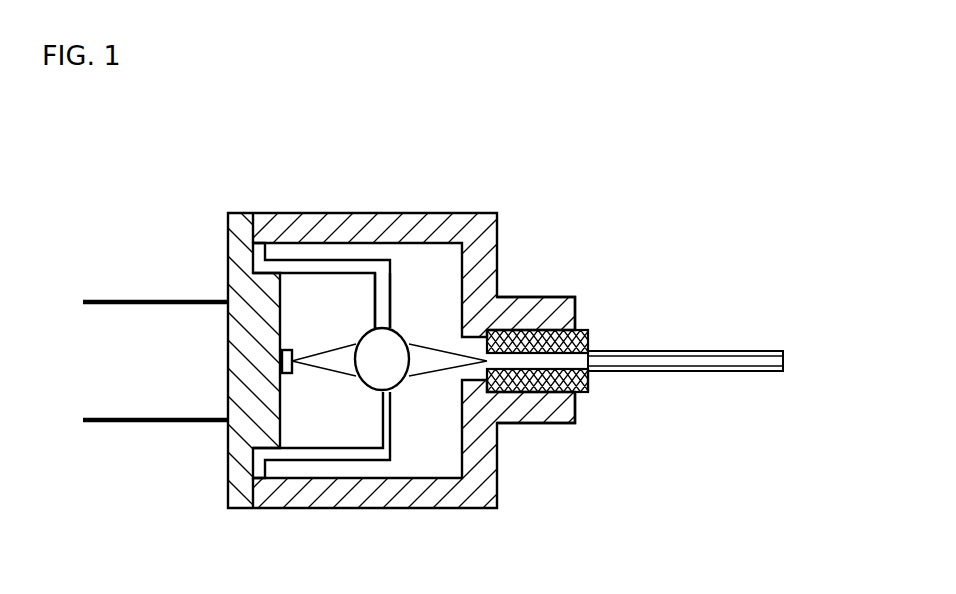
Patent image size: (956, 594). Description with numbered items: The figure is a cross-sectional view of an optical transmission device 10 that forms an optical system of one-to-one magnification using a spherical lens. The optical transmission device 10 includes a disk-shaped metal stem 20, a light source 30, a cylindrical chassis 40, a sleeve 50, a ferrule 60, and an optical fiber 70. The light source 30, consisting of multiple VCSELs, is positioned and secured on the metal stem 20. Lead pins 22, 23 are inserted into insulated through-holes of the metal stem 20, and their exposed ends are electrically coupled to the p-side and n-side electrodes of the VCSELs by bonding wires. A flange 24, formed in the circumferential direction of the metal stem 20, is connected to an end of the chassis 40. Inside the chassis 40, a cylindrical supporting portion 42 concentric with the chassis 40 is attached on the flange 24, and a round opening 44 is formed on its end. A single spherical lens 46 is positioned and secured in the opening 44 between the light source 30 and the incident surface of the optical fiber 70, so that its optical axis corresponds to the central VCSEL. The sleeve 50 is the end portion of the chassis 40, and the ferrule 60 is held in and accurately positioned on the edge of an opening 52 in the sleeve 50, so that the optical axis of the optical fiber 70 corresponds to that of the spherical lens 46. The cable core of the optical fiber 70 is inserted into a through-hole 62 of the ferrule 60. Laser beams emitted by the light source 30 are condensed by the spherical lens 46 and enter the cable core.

The optical transmission device 10 is at (429, 114).
The metal stem 20 is at (243, 212).
The lead pin 22 is at (132, 300).
The lead pin 23 is at (130, 423).
The flange 24 is at (257, 222).
The light source 30 is at (292, 373).
The chassis 40 is at (490, 212).
The supporting portion 42 is at (317, 258).
The opening 44 is at (375, 327).
The spherical lens 46 is at (405, 330).
The sleeve 50 is at (524, 297).
The opening 52 is at (563, 330).
The ferrule 60 is at (588, 391).
The through-hole 62 is at (590, 383).
The optical fiber 70 is at (705, 350).